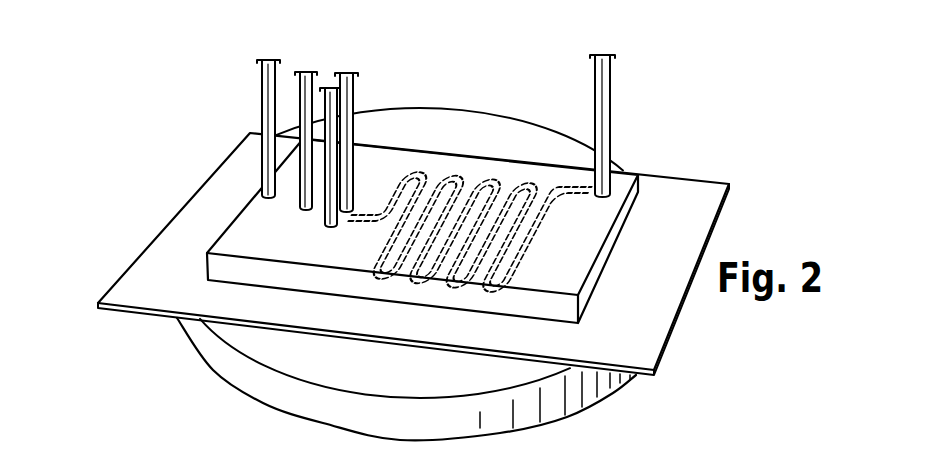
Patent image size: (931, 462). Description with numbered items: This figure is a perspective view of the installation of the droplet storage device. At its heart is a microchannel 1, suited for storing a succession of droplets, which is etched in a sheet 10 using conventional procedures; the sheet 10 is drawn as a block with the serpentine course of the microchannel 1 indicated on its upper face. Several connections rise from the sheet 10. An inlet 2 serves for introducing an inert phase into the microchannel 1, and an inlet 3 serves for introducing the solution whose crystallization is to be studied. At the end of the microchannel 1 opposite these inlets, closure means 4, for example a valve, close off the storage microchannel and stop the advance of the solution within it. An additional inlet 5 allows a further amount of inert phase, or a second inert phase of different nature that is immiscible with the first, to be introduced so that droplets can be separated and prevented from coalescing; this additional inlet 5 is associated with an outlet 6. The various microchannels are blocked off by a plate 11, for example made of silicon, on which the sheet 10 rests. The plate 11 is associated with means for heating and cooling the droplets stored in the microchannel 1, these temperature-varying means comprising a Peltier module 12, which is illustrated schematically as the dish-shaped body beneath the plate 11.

The microchannel 1 is at (491, 176).
The inlet 2 is at (262, 96).
The inlet 3 is at (299, 74).
The closure means 4 is at (610, 106).
The additional inlet 5 is at (354, 91).
The outlet 6 is at (326, 86).
The sheet 10 is at (435, 144).
The plate 11 is at (693, 199).
The Peltier module 12 is at (326, 422).